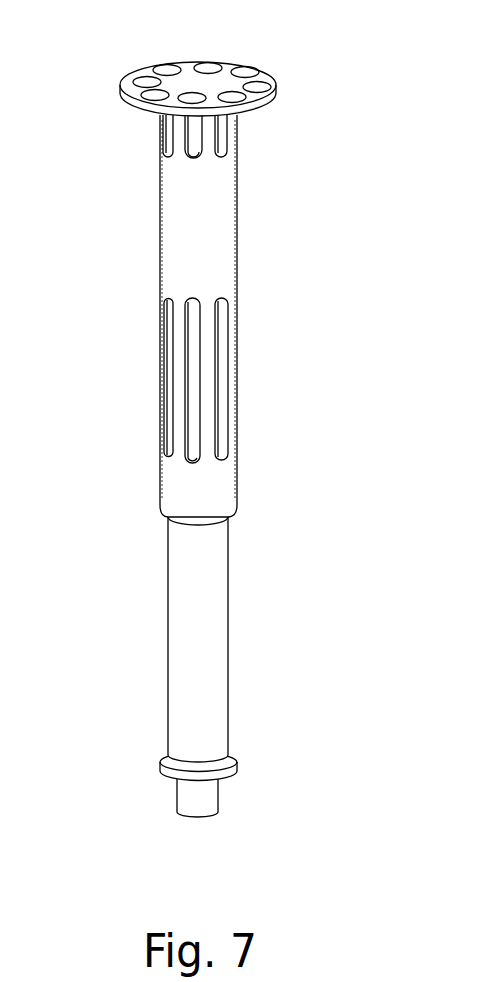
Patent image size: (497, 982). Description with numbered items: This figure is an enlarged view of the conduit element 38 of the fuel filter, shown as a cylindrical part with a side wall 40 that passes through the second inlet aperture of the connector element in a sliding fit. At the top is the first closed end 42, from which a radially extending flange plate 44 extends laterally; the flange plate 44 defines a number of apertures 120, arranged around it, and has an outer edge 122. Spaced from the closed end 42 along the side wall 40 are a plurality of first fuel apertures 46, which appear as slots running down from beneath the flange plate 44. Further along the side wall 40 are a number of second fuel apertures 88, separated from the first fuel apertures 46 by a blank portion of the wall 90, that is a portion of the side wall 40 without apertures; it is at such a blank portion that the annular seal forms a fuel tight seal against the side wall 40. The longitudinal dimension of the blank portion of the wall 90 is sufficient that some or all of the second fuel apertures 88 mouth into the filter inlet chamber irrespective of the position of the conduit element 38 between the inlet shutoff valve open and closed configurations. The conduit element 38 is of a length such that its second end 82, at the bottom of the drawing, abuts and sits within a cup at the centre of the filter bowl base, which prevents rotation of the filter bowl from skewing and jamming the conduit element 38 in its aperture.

The conduit element 38 is at (218, 446).
The side wall 40 is at (205, 320).
The first closed end 42 is at (218, 76).
The flange plate 44 is at (148, 72).
The first fuel apertures 46 is at (168, 132).
The second end 82 is at (198, 818).
The second fuel apertures 88 is at (223, 398).
The blank portion of the wall 90 is at (177, 223).
The apertures 120 is at (263, 80).
The outer edge 122 is at (268, 100).